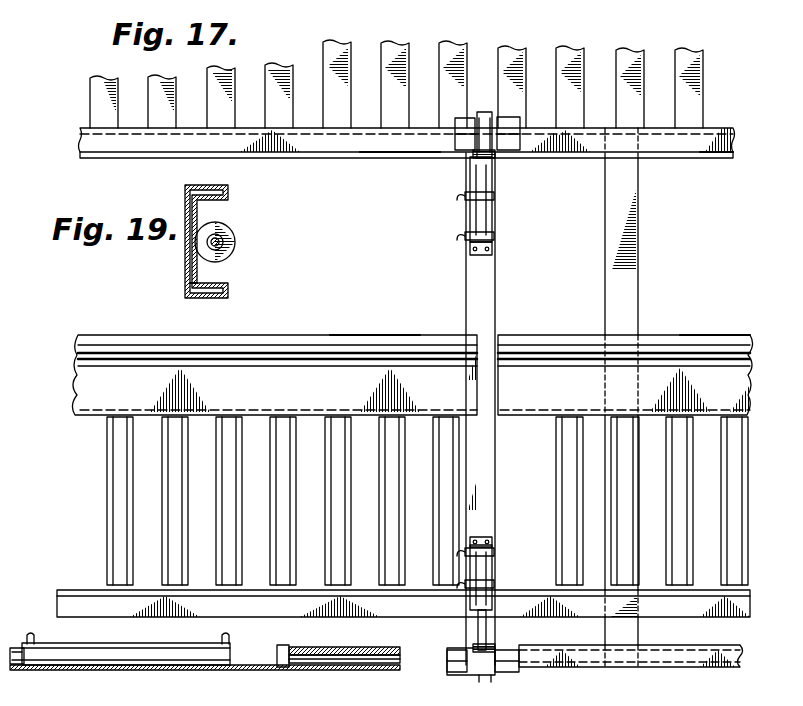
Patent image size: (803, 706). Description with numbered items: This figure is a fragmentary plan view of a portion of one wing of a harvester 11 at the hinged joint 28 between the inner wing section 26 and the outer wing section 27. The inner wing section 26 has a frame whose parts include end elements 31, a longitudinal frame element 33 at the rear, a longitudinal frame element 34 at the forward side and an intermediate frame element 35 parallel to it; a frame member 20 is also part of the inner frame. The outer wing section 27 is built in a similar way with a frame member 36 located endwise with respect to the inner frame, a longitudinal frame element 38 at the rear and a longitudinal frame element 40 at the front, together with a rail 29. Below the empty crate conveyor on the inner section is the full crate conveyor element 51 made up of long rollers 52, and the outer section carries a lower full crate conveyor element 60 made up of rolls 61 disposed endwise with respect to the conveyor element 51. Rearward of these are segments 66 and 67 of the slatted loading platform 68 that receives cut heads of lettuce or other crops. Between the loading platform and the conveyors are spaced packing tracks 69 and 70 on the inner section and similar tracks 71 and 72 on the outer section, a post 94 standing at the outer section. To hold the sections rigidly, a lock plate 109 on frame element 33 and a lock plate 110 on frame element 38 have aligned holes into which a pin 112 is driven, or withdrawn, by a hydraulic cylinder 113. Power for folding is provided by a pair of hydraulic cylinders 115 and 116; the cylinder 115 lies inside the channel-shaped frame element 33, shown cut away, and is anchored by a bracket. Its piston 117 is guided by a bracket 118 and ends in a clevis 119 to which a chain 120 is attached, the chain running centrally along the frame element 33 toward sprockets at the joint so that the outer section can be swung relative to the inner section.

In FIG. 17, the fence assembly 11 is at (728, 76).
In FIG. 17, the upper rail 20 is at (78, 378).
In FIG. 17, the inner wing section 26 is at (54, 502).
In FIG. 17, the outer wing section 27 is at (680, 322).
In FIG. 17, the hinged joint 28 is at (483, 397).
In FIG. 17, the bottom rail 29 is at (658, 668).
In FIG. 17, the end elements 31 is at (468, 306).
In FIG. 17, the longitudinal frame element 33 is at (328, 144).
In FIG. 17, the longitudinal frame element 34 is at (182, 668).
In FIG. 19, the longitudinal frame element 34 is at (186, 272).
In FIG. 17, the intermediate frame element 35 is at (176, 612).
In FIG. 17, the frame member 36 is at (750, 378).
In FIG. 17, the longitudinal frame element 38 is at (574, 144).
In FIG. 17, the longitudinal frame element 40 is at (728, 617).
In FIG. 17, the full crate conveyor element 51 is at (100, 452).
In FIG. 17, the long rollers 52 is at (165, 534).
In FIG. 17, the lower full crate conveyor element 60 is at (750, 462).
In FIG. 17, the rolls 61 is at (738, 496).
In FIG. 17, the segment of loading platform 66 is at (327, 60).
In FIG. 17, the segment of loading platform 67 is at (618, 58).
In FIG. 17, the loading platform 68 is at (516, 44).
In FIG. 17, the packing track 69 is at (378, 328).
In FIG. 17, the packing track 70 is at (405, 153).
In FIG. 17, the packing track 71 is at (740, 336).
In FIG. 17, the packing track 72 is at (718, 155).
In FIG. 17, the end post 94 is at (638, 216).
In FIG. 17, the lock plate 109 is at (460, 118).
In FIG. 17, the lock plate 110 is at (505, 126).
In FIG. 17, the pin 112 is at (472, 160).
In FIG. 17, the hydraulic cylinder 113 is at (484, 216).
In FIG. 17, the hydraulic cylinder 115 is at (116, 664).
In FIG. 19, the hydraulic cylinder 115 is at (235, 242).
In FIG. 17, the hydraulic cylinder 116 is at (18, 666).
In FIG. 17, the piston 117 is at (266, 660).
In FIG. 19, the piston 117 is at (220, 238).
In FIG. 17, the bracket 118 is at (286, 660).
In FIG. 19, the bracket 118 is at (190, 284).
In FIG. 17, the clevis 119 is at (292, 650).
In FIG. 17, the chain 120 is at (368, 656).